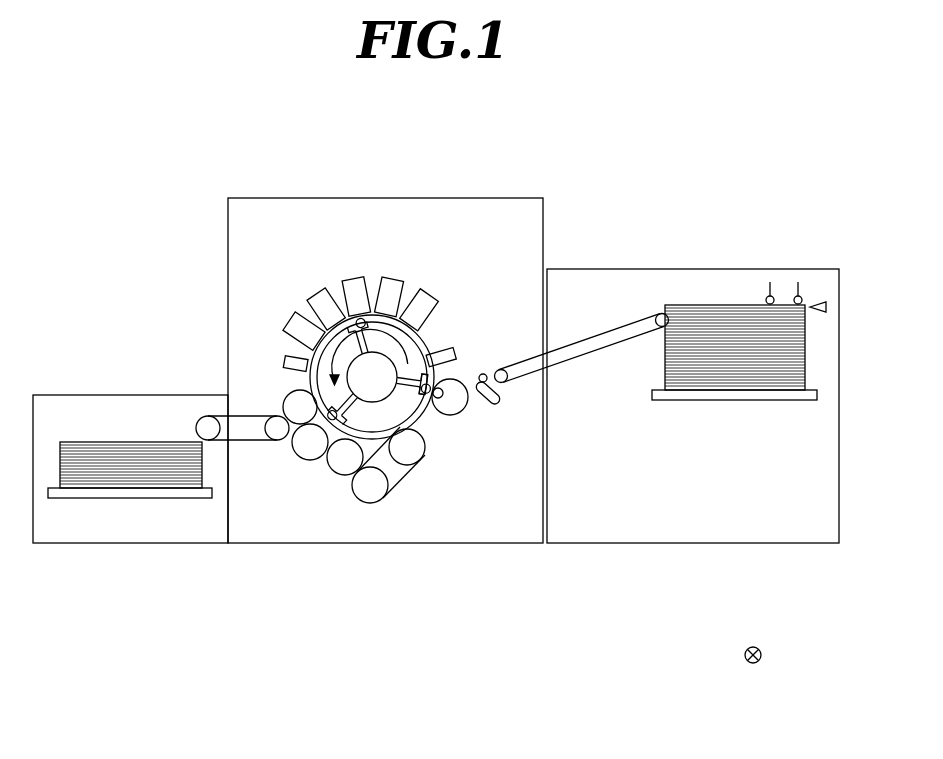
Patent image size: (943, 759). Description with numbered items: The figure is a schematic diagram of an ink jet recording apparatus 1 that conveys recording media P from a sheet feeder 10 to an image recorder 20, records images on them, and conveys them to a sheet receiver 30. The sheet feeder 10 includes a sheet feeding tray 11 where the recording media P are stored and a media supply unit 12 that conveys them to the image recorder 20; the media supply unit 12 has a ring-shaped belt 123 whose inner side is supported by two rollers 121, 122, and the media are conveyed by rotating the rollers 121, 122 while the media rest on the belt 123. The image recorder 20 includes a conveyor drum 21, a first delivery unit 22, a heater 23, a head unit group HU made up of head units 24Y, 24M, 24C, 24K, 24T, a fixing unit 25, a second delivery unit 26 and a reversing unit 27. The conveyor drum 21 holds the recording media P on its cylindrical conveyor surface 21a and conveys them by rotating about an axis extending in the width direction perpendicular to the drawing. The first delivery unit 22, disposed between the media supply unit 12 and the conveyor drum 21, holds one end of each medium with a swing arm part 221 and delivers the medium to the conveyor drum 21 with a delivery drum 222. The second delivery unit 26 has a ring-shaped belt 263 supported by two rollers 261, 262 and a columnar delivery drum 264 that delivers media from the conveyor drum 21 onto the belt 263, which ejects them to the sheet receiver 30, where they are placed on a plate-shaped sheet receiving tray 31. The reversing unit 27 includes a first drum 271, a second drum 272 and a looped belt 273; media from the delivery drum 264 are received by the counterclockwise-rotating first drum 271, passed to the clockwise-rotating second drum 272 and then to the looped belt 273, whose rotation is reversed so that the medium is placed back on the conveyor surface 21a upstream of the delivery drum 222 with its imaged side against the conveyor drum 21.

The ink jet recording apparatus 1 is at (722, 117).
The sheet feeder 10 is at (803, 268).
The sheet feeding tray 11 is at (740, 400).
The media supply unit 12 is at (690, 210).
The roller 121 is at (662, 313).
The roller 122 is at (505, 370).
The belt 123 is at (582, 340).
The image recorder 20 is at (227, 307).
The conveyor drum 21 is at (402, 400).
The conveyor surface 21a is at (418, 415).
The first delivery unit 22 is at (570, 132).
The swing arm part 221 is at (490, 374).
The delivery drum 222 is at (455, 378).
The heater 23 is at (442, 338).
The head unit 24T is at (290, 320).
The head unit 24K is at (320, 302).
The head unit 24C is at (357, 290).
The head unit 24M is at (390, 290).
The head unit 24Y is at (423, 293).
The fixing unit 25 is at (285, 358).
The second delivery unit 26 is at (160, 594).
The roller 261 is at (277, 430).
The roller 262 is at (210, 432).
The belt 263 is at (247, 441).
The delivery drum 264 is at (292, 408).
The reversing unit 27 is at (503, 646).
The first drum 271 is at (297, 437).
The second drum 272 is at (313, 448).
The looped belt 273 is at (397, 483).
The sheet receiver 30 is at (65, 395).
The sheet receiving tray 31 is at (118, 497).
The recording media P is at (138, 450).
The head unit group HU is at (450, 113).